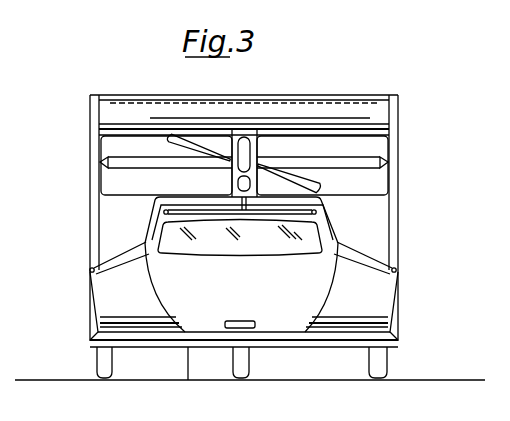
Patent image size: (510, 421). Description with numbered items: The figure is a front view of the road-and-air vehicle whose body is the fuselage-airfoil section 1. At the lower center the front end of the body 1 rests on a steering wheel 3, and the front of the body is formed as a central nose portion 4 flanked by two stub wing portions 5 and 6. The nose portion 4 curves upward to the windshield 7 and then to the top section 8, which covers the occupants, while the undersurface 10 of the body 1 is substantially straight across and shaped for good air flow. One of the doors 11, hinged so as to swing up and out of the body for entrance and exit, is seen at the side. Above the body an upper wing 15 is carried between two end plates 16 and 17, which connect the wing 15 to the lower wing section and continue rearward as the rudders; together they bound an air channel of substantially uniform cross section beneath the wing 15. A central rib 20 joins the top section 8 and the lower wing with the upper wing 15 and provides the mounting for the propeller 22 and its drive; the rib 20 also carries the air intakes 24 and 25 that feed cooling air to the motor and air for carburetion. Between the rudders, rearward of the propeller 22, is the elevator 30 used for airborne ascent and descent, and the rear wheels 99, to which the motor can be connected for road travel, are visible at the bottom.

The fuselage-airfoil section 1 is at (88, 324).
The steering wheel 3 is at (249, 366).
The central nose portion 4 is at (226, 278).
The stub wing portion 5 is at (385, 300).
The stub wing portion 6 is at (100, 296).
The windshield 7 is at (262, 247).
The top section 8 is at (183, 196).
The undersurface 10 is at (186, 375).
The door 11 is at (88, 269).
The upper wing 15 is at (158, 93).
The end plate 16 is at (398, 140).
The end plate 17 is at (90, 122).
The central rib 20 is at (170, 142).
The propeller 22 is at (320, 182).
The air intake 24 is at (258, 143).
The air intake 25 is at (238, 184).
The elevator 30 is at (130, 170).
The rear wheels 99 is at (97, 365).